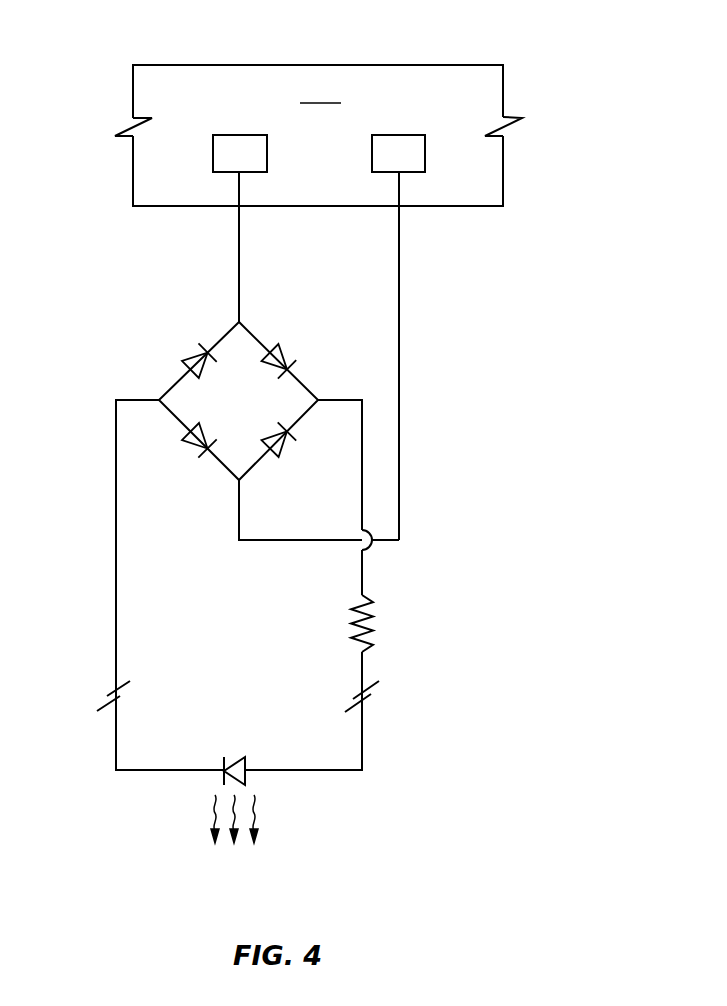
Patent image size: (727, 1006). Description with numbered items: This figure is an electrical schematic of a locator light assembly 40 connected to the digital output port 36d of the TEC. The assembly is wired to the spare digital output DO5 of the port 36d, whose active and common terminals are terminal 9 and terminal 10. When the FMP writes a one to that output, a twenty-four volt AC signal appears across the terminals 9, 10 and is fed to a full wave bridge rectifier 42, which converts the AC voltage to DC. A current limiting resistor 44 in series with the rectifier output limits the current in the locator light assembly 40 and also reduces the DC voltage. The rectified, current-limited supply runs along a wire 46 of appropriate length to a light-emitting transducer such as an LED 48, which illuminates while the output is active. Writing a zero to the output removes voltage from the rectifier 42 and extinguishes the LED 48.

The digital output port 36d is at (503, 90).
The terminal 9 is at (240, 153).
The terminal 10 is at (398, 153).
The locator light assembly 40 is at (442, 372).
The full wave bridge rectifier 42 is at (157, 366).
The current limiting resistor 44 is at (372, 618).
The wire 46 is at (115, 737).
The LED 48 is at (233, 747).